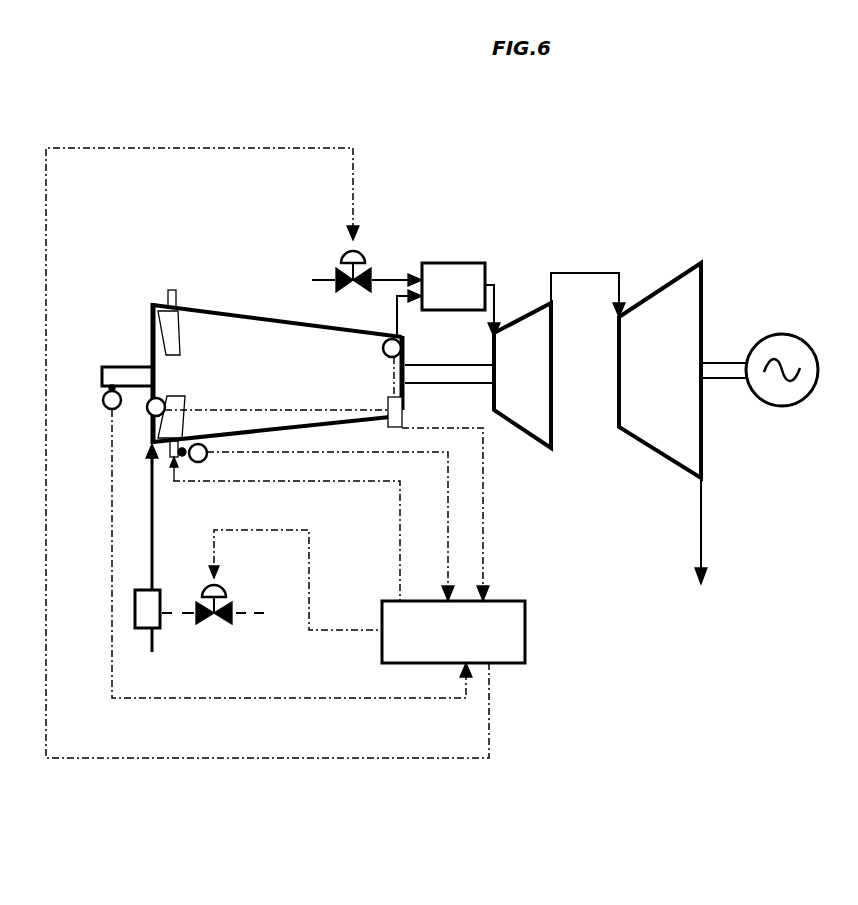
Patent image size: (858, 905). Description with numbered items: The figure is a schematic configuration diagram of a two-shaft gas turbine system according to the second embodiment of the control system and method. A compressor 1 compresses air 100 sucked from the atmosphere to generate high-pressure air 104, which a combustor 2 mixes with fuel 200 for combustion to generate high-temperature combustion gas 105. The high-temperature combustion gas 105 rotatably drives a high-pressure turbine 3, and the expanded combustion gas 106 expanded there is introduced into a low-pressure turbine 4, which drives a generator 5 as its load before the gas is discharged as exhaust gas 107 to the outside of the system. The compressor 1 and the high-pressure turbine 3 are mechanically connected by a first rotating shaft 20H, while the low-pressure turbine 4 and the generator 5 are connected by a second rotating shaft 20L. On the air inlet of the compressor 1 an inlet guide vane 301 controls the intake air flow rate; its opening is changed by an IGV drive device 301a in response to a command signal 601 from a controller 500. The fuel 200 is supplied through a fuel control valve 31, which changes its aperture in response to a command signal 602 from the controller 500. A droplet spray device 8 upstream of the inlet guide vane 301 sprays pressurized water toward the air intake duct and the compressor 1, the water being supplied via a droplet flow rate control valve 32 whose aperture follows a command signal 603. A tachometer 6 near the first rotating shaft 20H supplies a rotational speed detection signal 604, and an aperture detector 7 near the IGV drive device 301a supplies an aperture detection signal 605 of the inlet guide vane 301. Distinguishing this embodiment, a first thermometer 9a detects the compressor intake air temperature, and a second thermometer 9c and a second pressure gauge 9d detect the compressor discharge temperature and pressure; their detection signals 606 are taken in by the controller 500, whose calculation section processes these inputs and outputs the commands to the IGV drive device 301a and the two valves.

The compressor 1 is at (205, 305).
The combustor 2 is at (425, 262).
The high-pressure turbine 3 is at (508, 314).
The low-pressure turbine 4 is at (695, 264).
The generator 5 is at (808, 358).
The tachometer 6 is at (105, 406).
The aperture detector 7 is at (207, 458).
The droplet spray device 8 is at (135, 602).
The first thermometer 9a is at (165, 400).
The second thermometer 9c is at (383, 352).
The second pressure gauge 9d is at (395, 392).
The first rotating shaft 20H is at (448, 380).
The second rotating shaft 20L is at (713, 375).
The fuel control valve 31 is at (345, 248).
The droplet flow rate control valve 32 is at (235, 620).
The air 100 is at (159, 566).
The high-pressure air 104 is at (395, 322).
The high-temperature combustion gas 105 is at (490, 320).
The expanded combustion gas 106 is at (572, 272).
The exhaust gas 107 is at (701, 546).
The fuel 200 is at (343, 284).
The inlet guide vane 301 is at (170, 290).
The IGV drive device 301a is at (170, 458).
The controller 500 is at (518, 643).
The IGV opening command signal 601 is at (395, 483).
The fuel control valve aperture command signal 602 is at (115, 760).
The spray flow rate control valve aperture command signal 603 is at (337, 628).
The rotational speed detection signal 604 is at (278, 705).
The aperture detection signal 605 is at (447, 463).
The detection signals 606 is at (485, 520).